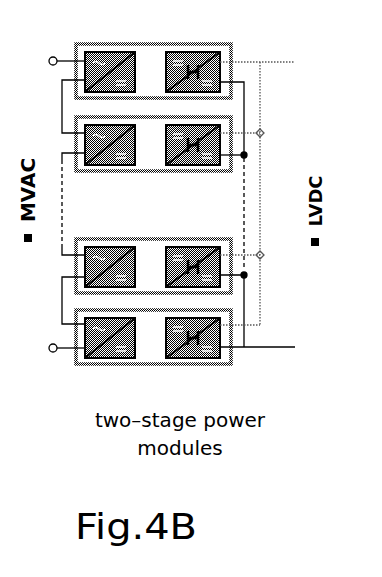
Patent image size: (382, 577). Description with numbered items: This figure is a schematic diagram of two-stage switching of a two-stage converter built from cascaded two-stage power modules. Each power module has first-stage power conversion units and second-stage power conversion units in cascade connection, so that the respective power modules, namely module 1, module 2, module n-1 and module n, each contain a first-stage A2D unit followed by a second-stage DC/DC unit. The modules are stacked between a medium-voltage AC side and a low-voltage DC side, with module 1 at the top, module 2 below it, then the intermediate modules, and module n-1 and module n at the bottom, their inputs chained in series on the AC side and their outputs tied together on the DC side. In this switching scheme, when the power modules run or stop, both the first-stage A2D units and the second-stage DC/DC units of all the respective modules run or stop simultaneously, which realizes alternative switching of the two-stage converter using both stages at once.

The Module 1 is at (153, 60).
The Module 2 is at (153, 161).
The Module n-1 is at (153, 254).
The Module n is at (153, 351).